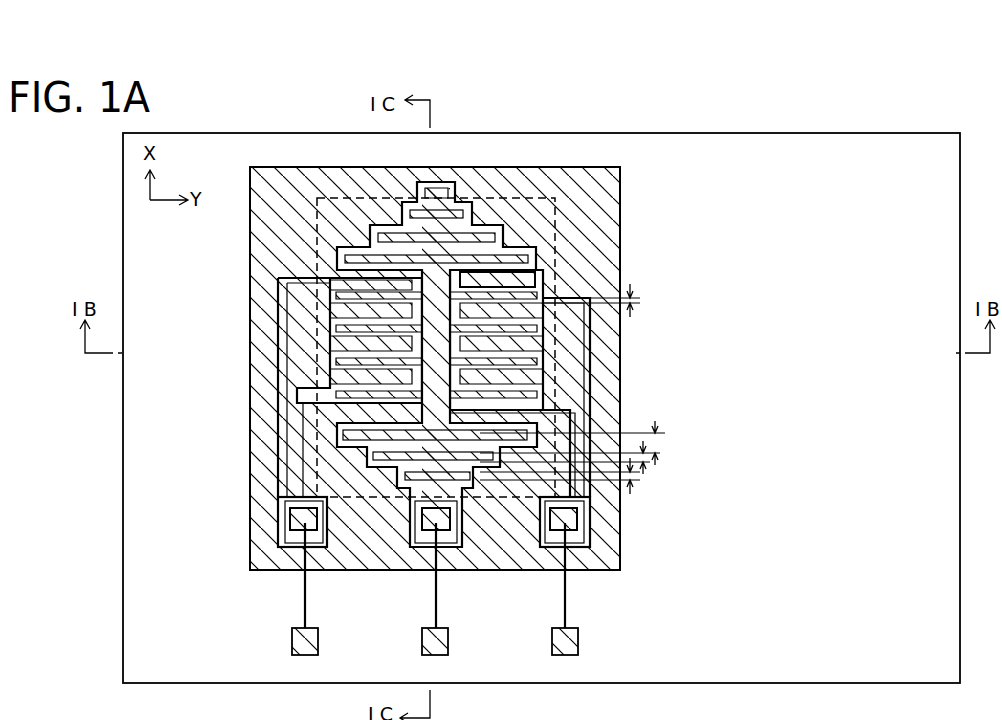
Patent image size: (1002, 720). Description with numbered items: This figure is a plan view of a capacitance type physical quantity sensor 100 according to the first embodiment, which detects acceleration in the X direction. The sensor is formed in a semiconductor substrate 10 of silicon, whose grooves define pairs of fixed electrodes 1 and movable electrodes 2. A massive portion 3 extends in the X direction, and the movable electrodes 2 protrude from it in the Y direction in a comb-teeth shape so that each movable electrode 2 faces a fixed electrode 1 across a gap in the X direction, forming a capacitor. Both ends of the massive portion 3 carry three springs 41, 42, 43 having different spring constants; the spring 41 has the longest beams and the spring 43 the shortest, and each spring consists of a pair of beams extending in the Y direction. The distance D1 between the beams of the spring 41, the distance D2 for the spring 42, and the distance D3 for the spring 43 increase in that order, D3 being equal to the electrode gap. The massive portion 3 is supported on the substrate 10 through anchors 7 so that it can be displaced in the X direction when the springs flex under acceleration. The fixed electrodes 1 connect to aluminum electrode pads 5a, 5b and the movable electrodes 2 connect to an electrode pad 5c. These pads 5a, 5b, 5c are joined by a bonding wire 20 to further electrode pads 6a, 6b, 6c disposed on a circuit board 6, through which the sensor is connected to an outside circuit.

The circuit board 6 is at (660, 131).
The physical quantity sensor 100 is at (636, 181).
The semiconductor substrate 10 is at (250, 517).
The fixed electrode 1 is at (500, 378).
The movable electrode 2 is at (497, 392).
The massive portion 3 is at (504, 376).
The spring 41 is at (358, 250).
The spring 42 is at (482, 228).
The spring 43 is at (455, 195).
The electrode pad 5a is at (557, 537).
The electrode pad 5b is at (300, 530).
The electrode pad 5c is at (428, 537).
The anchor 7 is at (443, 502).
The bonding wire 20 is at (300, 608).
The electrode pad 6a is at (578, 640).
The electrode pad 6b is at (318, 640).
The electrode pad 6c is at (448, 640).
The distance D1 is at (587, 443).
The distance D2 is at (580, 458).
The distance D3 is at (574, 393).